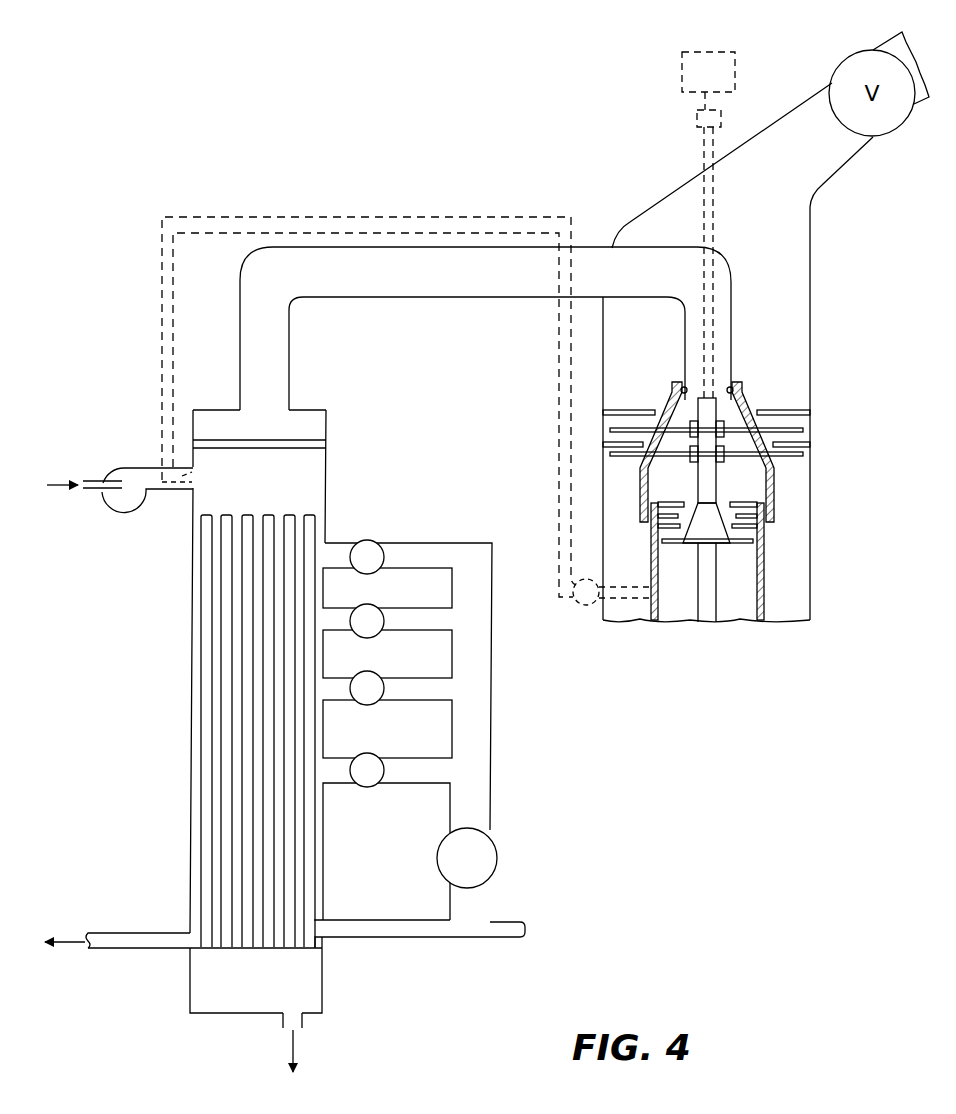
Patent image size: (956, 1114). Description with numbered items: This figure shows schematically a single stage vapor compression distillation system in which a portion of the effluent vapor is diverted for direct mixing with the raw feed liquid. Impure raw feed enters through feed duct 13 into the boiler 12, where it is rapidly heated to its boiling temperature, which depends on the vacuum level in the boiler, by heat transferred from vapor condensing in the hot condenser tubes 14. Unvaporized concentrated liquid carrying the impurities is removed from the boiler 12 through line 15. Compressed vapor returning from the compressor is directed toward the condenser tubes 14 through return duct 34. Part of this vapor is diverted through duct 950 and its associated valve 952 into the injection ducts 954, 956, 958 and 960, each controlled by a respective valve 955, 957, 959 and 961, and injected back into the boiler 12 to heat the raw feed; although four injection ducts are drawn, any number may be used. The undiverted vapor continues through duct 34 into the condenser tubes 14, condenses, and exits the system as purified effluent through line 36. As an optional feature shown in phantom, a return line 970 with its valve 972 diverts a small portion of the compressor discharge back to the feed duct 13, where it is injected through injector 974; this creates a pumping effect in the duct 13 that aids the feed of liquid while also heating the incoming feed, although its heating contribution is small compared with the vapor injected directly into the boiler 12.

The boiler 12 is at (192, 625).
The feed duct 13 is at (129, 465).
The condenser tubes 14 is at (217, 740).
The line 15 is at (282, 1024).
The return duct 34 is at (384, 919).
The line 36 is at (157, 950).
The duct 950 is at (493, 776).
The valve 952 is at (496, 873).
The injection duct 954 is at (418, 786).
The valve 955 is at (367, 753).
The injection duct 956 is at (442, 702).
The valve 957 is at (367, 672).
The injection duct 958 is at (443, 632).
The valve 959 is at (367, 604).
The injection duct 960 is at (443, 572).
The valve 961 is at (367, 541).
The return line 970 is at (380, 218).
The valve 972 is at (582, 606).
The injector 974 is at (181, 487).